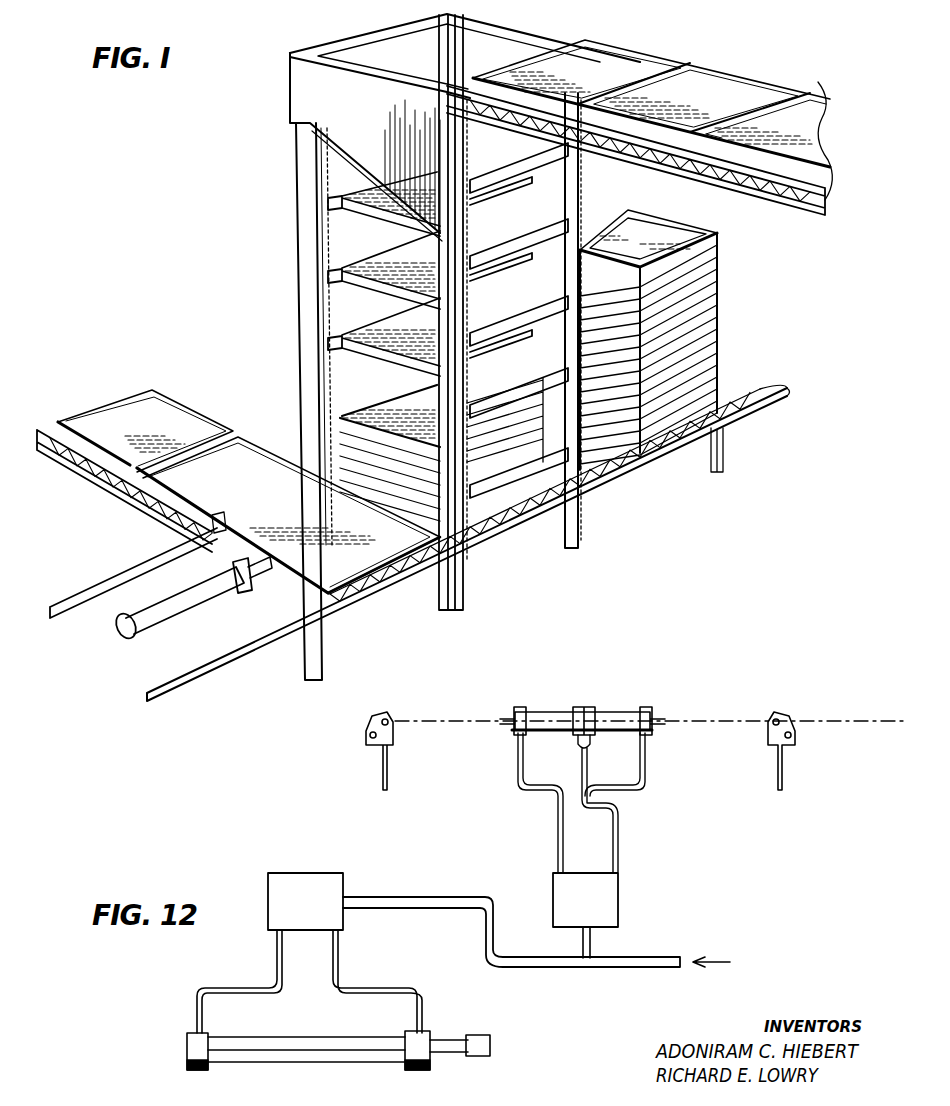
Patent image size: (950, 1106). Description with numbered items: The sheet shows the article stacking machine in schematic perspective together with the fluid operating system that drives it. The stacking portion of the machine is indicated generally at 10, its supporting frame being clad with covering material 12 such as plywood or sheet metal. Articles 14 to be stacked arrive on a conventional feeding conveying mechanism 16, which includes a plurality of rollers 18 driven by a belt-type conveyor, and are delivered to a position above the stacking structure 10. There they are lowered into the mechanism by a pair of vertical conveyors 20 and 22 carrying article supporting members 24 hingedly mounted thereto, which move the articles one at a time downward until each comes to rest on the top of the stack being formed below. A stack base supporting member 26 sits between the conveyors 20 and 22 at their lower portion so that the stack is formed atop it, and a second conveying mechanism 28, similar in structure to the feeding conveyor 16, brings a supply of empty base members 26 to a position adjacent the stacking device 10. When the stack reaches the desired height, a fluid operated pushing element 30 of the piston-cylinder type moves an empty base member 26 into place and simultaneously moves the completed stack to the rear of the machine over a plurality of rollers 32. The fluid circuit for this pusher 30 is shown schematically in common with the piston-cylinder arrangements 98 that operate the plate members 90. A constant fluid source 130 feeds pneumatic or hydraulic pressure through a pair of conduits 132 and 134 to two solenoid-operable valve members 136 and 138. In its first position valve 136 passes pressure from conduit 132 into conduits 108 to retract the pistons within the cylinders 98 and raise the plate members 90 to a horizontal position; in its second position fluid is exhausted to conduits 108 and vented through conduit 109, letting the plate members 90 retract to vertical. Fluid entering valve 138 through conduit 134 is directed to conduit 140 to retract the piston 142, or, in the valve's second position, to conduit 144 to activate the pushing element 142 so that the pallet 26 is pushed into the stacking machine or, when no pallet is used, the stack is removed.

In FIG. 1, the stacking portion 10 is at (282, 224).
In FIG. 1, the covering material 12 is at (290, 68).
In FIG. 1, the article 14 is at (700, 73).
In FIG. 1, the conveying mechanism 16 is at (675, 148).
In FIG. 1, the rollers 18 is at (603, 130).
In FIG. 1, the conveyor 20 is at (322, 258).
In FIG. 1, the conveyor 22 is at (573, 193).
In FIG. 1, the article supporting members 24 is at (350, 205).
In FIG. 1, the stack base supporting member 26 is at (237, 438).
In FIG. 1, the conveying mechanism 28 is at (108, 482).
In FIG. 1, the fluid operated pushing element 30 is at (216, 588).
In FIG. 12, the fluid operated pushing element 30 is at (342, 1064).
In FIG. 1, the rollers 32 is at (376, 590).
In FIG. 12, the plate members 90 is at (388, 773).
In FIG. 12, the piston-cylinder arrangements 98 is at (556, 712).
In FIG. 12, the conduits 108 is at (534, 792).
In FIG. 12, the conduit 109 is at (588, 776).
In FIG. 12, the constant fluid source 130 is at (662, 958).
In FIG. 12, the conduit 132 is at (592, 946).
In FIG. 12, the conduit 134 is at (520, 965).
In FIG. 12, the valve member 136 is at (612, 884).
In FIG. 12, the valve member 138 is at (337, 886).
In FIG. 12, the conduit 140 is at (397, 988).
In FIG. 12, the piston 142 is at (492, 1043).
In FIG. 12, the conduit 144 is at (243, 988).